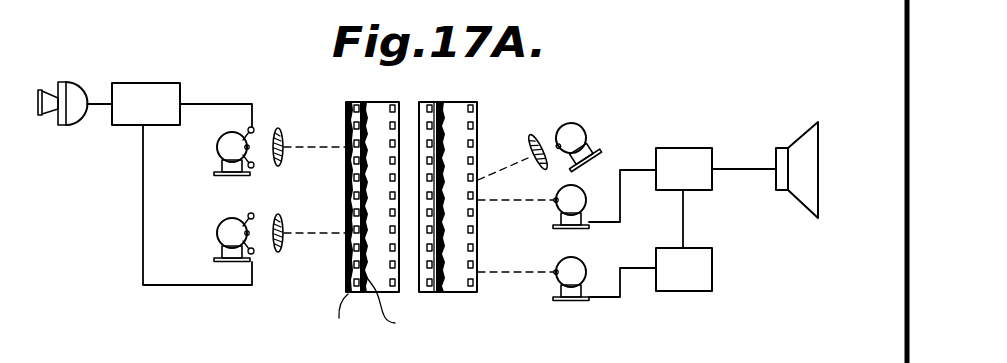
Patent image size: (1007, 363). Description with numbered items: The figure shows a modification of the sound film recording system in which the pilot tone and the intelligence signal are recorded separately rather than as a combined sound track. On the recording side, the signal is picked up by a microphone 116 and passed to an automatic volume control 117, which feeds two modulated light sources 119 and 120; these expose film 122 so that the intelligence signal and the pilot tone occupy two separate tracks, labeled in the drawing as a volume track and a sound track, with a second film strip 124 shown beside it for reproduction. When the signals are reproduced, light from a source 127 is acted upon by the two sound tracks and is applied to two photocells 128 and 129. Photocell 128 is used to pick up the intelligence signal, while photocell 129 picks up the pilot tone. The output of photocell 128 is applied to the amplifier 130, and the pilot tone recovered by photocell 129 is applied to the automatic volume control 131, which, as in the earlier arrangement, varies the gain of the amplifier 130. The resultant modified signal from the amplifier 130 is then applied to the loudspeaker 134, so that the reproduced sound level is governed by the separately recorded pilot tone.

The microphone 116 is at (70, 127).
The automatic volume control 117 is at (128, 86).
The recording lamp 119 is at (262, 128).
The recording lamp 120 is at (272, 205).
The film with volume track and sound track 122 is at (380, 102).
The film 124 is at (448, 104).
The light source 127 is at (582, 127).
The photocell 128 is at (600, 188).
The photocell 129 is at (598, 254).
The amplifier 130 is at (693, 147).
The automatic volume control 131 is at (713, 274).
The loudspeaker 134 is at (800, 148).